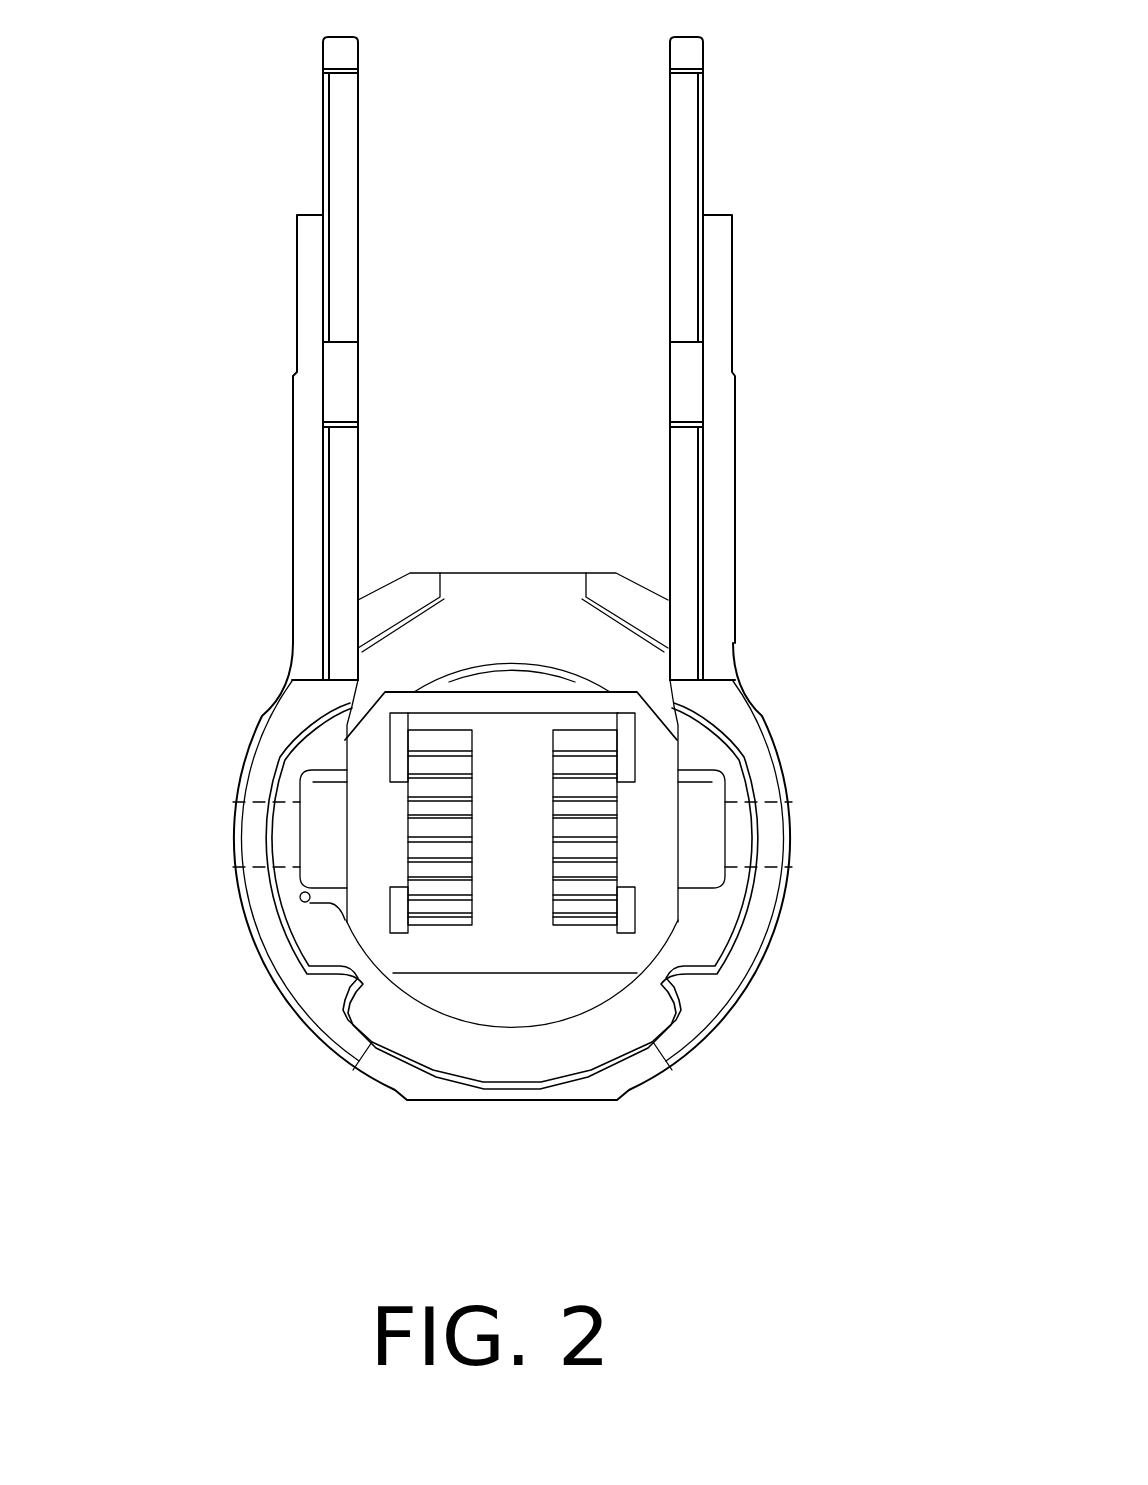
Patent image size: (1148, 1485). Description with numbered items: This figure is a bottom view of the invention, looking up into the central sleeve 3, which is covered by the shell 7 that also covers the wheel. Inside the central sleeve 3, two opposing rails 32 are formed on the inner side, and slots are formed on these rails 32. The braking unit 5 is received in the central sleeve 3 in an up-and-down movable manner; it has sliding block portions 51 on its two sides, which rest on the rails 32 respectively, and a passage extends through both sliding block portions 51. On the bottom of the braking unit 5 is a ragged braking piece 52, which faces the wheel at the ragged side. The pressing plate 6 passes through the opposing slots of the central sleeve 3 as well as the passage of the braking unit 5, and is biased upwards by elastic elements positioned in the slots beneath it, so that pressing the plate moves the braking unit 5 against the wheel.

The central sleeve 3 is at (702, 940).
The braking unit 5 is at (563, 943).
The pressing plate 6 is at (257, 793).
The shell 7 is at (777, 930).
The rail 32 is at (308, 902).
The sliding block portion 51 is at (313, 788).
The ragged braking piece 52 is at (443, 880).